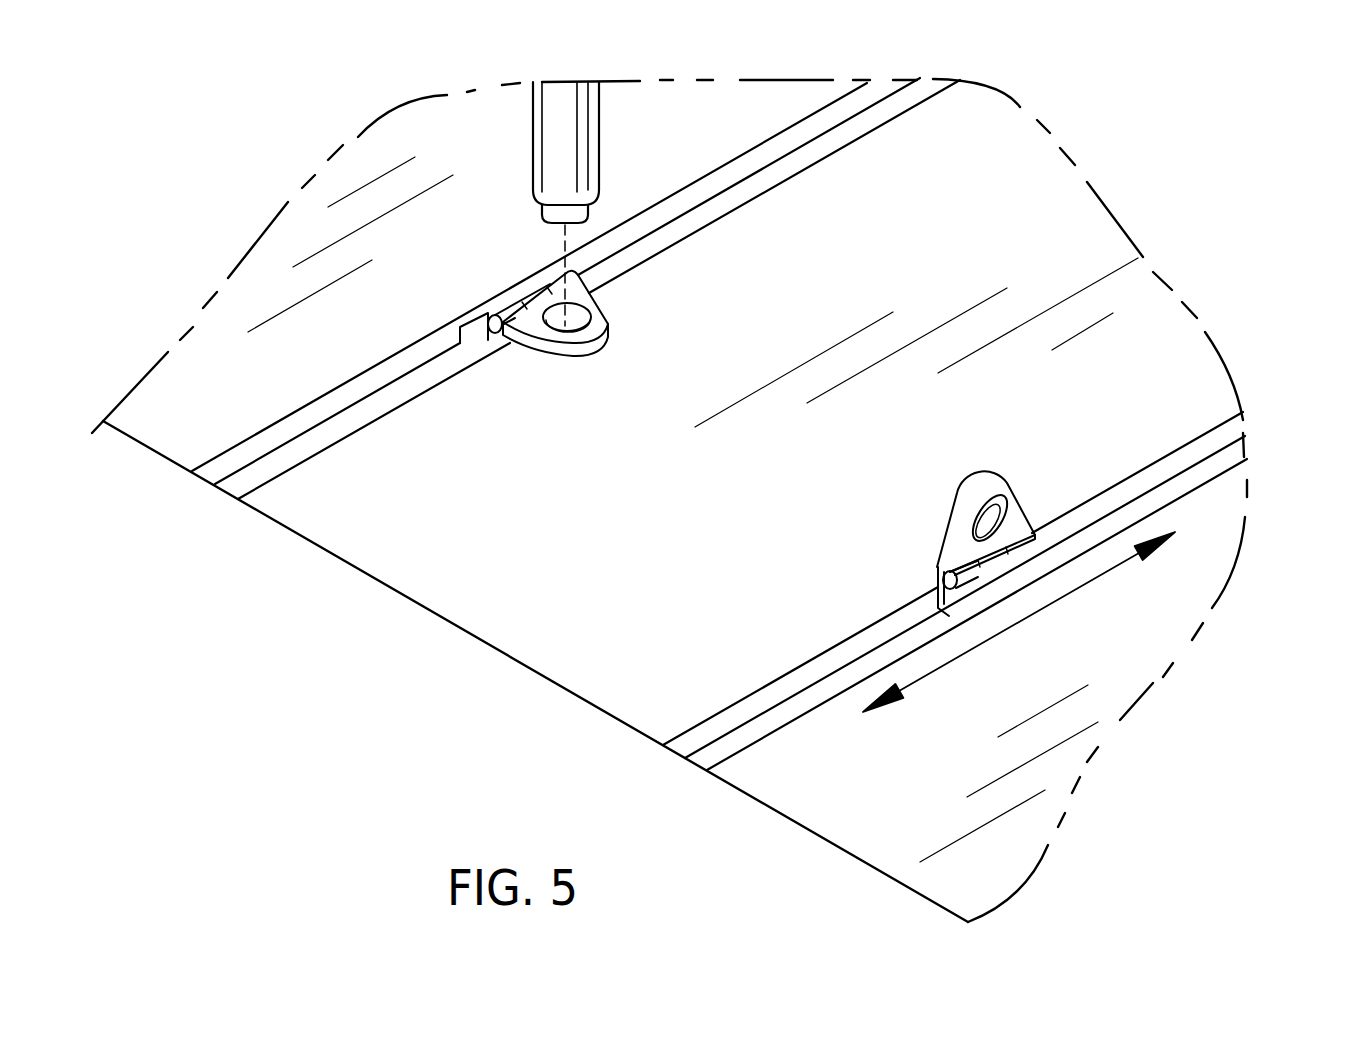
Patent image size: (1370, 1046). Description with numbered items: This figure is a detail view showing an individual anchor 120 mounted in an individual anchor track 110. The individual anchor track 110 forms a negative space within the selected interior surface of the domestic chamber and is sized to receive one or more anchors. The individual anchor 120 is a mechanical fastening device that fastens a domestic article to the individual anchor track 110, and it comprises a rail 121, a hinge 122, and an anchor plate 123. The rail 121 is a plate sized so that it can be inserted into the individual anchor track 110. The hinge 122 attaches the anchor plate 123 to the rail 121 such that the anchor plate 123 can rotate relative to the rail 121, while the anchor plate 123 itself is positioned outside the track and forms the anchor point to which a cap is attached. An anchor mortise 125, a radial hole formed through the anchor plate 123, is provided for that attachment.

The individual anchor track 110 is at (1150, 500).
The individual anchor 120 is at (951, 500).
The rail 121 is at (1003, 578).
The hinge 122 is at (948, 582).
The anchor plate 123 is at (992, 477).
The anchor mortise 125 is at (985, 532).